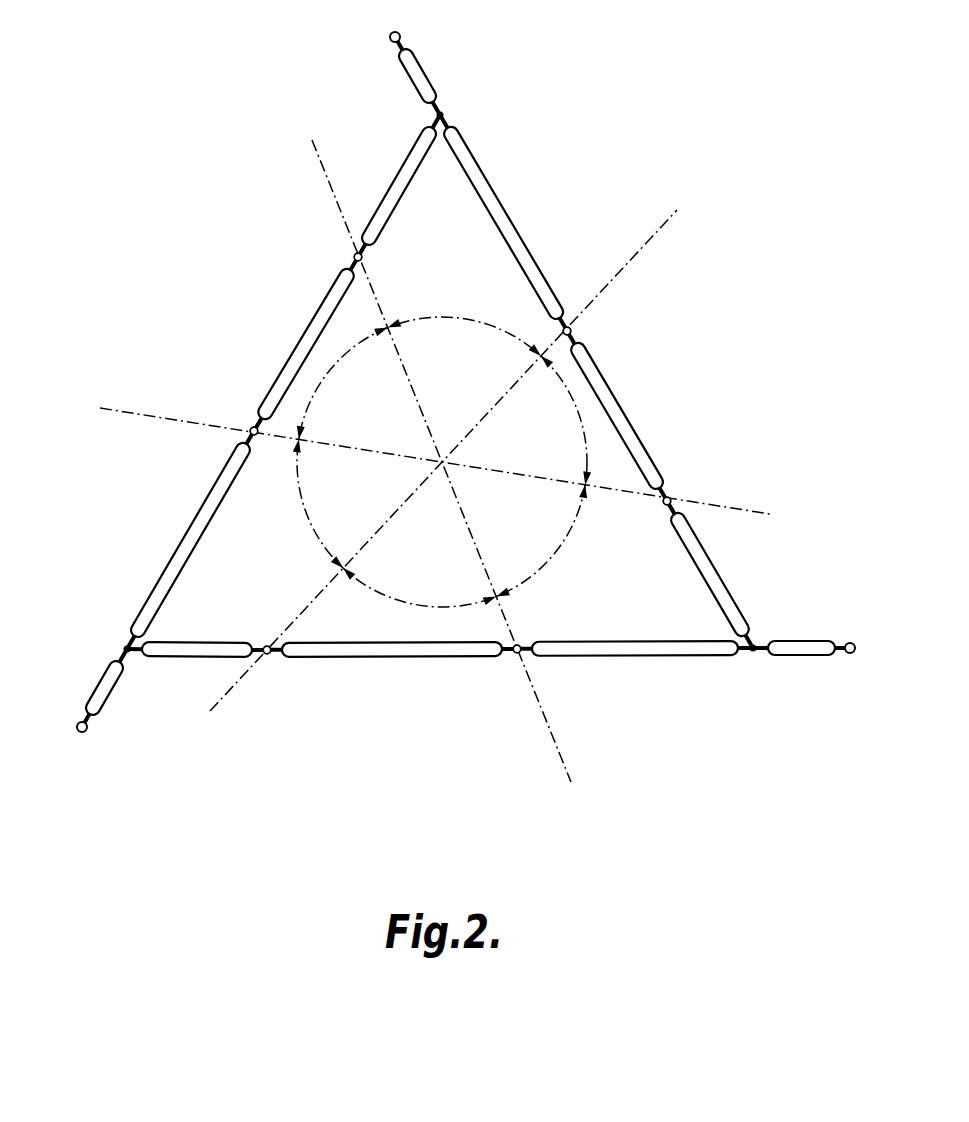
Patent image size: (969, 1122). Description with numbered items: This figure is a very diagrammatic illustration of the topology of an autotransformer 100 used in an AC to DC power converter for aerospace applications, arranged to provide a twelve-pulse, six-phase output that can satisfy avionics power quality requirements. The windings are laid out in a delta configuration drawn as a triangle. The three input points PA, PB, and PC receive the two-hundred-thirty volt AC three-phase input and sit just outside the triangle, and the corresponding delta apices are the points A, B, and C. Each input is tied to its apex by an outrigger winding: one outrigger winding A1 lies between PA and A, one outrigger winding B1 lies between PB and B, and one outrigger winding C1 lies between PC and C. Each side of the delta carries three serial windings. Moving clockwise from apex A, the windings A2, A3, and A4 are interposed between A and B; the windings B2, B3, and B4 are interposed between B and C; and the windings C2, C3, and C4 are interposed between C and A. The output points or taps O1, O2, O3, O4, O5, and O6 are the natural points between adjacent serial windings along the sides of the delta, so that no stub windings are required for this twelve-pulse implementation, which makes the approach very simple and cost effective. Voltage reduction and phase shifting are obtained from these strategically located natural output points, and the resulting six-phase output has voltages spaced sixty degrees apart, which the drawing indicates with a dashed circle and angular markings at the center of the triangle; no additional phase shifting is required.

The autotransformer 100 is at (582, 90).
The delta apex A is at (452, 111).
The delta apex B is at (765, 633).
The delta apex C is at (119, 640).
The outrigger winding A1 is at (437, 81).
The serial winding A2 is at (514, 214).
The serial winding A3 is at (607, 371).
The serial winding A4 is at (722, 559).
The outrigger winding B1 is at (800, 656).
The serial winding B2 is at (633, 656).
The serial winding B3 is at (390, 657).
The serial winding B4 is at (203, 658).
The outrigger winding C1 is at (102, 680).
The serial winding C2 is at (176, 548).
The serial winding C3 is at (310, 326).
The serial winding C4 is at (404, 164).
The output point O1 is at (587, 327).
The output point O2 is at (342, 251).
The output point O3 is at (240, 422).
The output point O4 is at (267, 664).
The output point O5 is at (531, 663).
The output point O6 is at (686, 492).
The input point PA is at (388, 25).
The input point PB is at (856, 633).
The input point PC is at (71, 742).